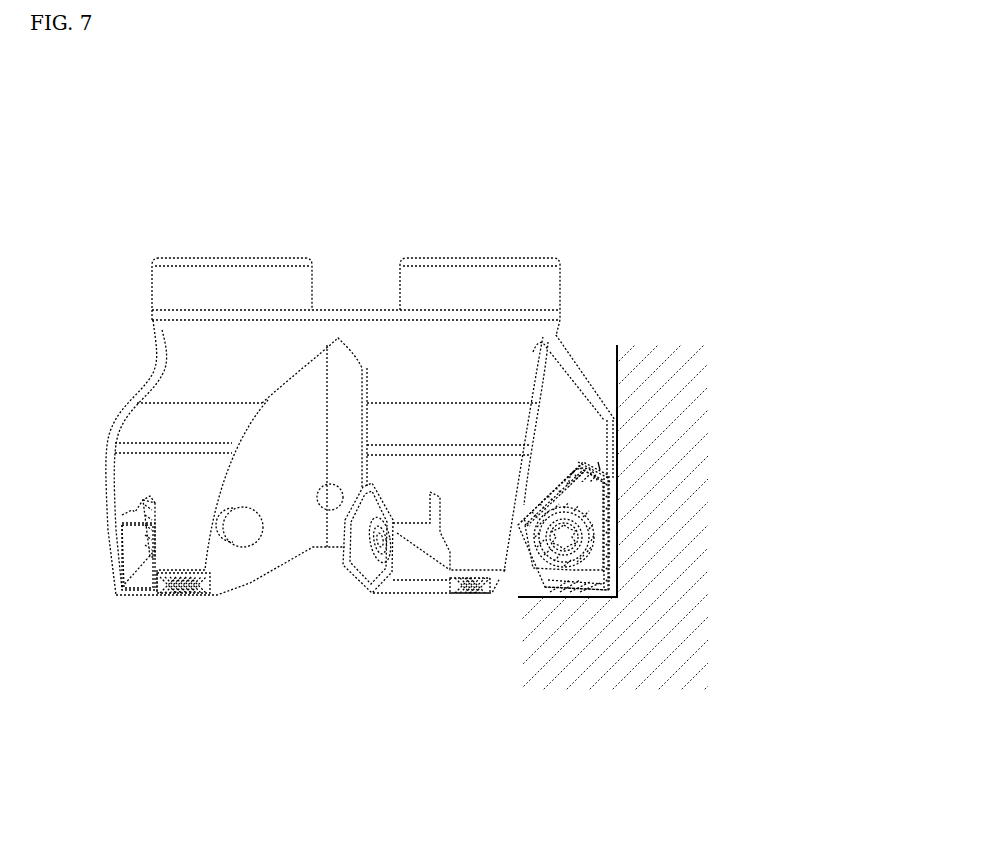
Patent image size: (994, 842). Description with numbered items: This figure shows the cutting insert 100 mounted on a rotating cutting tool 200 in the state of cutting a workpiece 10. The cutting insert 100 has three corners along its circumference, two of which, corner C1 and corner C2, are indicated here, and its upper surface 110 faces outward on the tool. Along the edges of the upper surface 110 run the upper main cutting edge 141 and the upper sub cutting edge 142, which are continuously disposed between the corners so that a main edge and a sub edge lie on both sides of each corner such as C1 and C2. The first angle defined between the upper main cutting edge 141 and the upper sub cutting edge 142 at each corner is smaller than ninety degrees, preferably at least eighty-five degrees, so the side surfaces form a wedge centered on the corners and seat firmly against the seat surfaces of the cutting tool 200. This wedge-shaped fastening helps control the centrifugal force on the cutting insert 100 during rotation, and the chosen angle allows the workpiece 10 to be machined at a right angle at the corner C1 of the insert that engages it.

The cutting tool 200 is at (522, 246).
The cutting insert 100 is at (142, 612).
The upper surface 110 is at (612, 527).
The upper main cutting edge 141 is at (566, 478).
The upper sub cutting edge 142 is at (617, 487).
The workpiece 10 is at (680, 437).
The corner C1 is at (617, 598).
The corner C2 is at (598, 462).